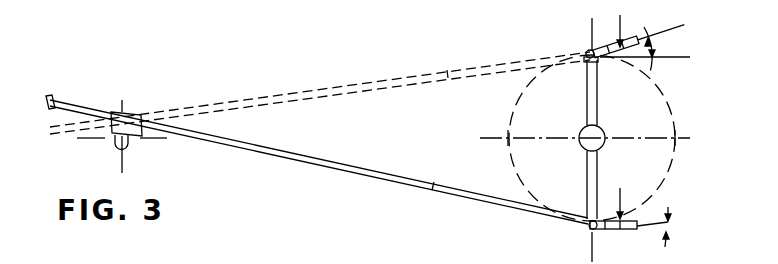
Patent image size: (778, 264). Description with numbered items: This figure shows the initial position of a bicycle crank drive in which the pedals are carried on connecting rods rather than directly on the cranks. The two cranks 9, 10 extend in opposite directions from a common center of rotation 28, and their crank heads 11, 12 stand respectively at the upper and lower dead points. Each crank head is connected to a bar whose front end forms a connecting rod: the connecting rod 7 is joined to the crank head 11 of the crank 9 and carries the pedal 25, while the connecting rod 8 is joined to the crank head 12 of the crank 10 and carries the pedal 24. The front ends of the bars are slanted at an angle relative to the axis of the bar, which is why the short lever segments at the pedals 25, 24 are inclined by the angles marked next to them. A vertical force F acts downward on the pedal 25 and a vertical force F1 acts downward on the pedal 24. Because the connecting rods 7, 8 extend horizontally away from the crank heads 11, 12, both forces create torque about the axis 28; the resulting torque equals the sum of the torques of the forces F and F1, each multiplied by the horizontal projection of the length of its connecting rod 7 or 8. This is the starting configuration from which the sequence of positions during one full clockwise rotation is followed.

The connecting rod 7 is at (584, 52).
The connecting rod 8 is at (598, 231).
The crank 9 is at (586, 105).
The crank 10 is at (586, 186).
The crank head 11 is at (578, 57).
The crank head 12 is at (574, 226).
The pedal 24 is at (638, 221).
The pedal 25 is at (632, 48).
The center of rotation 28 is at (598, 134).